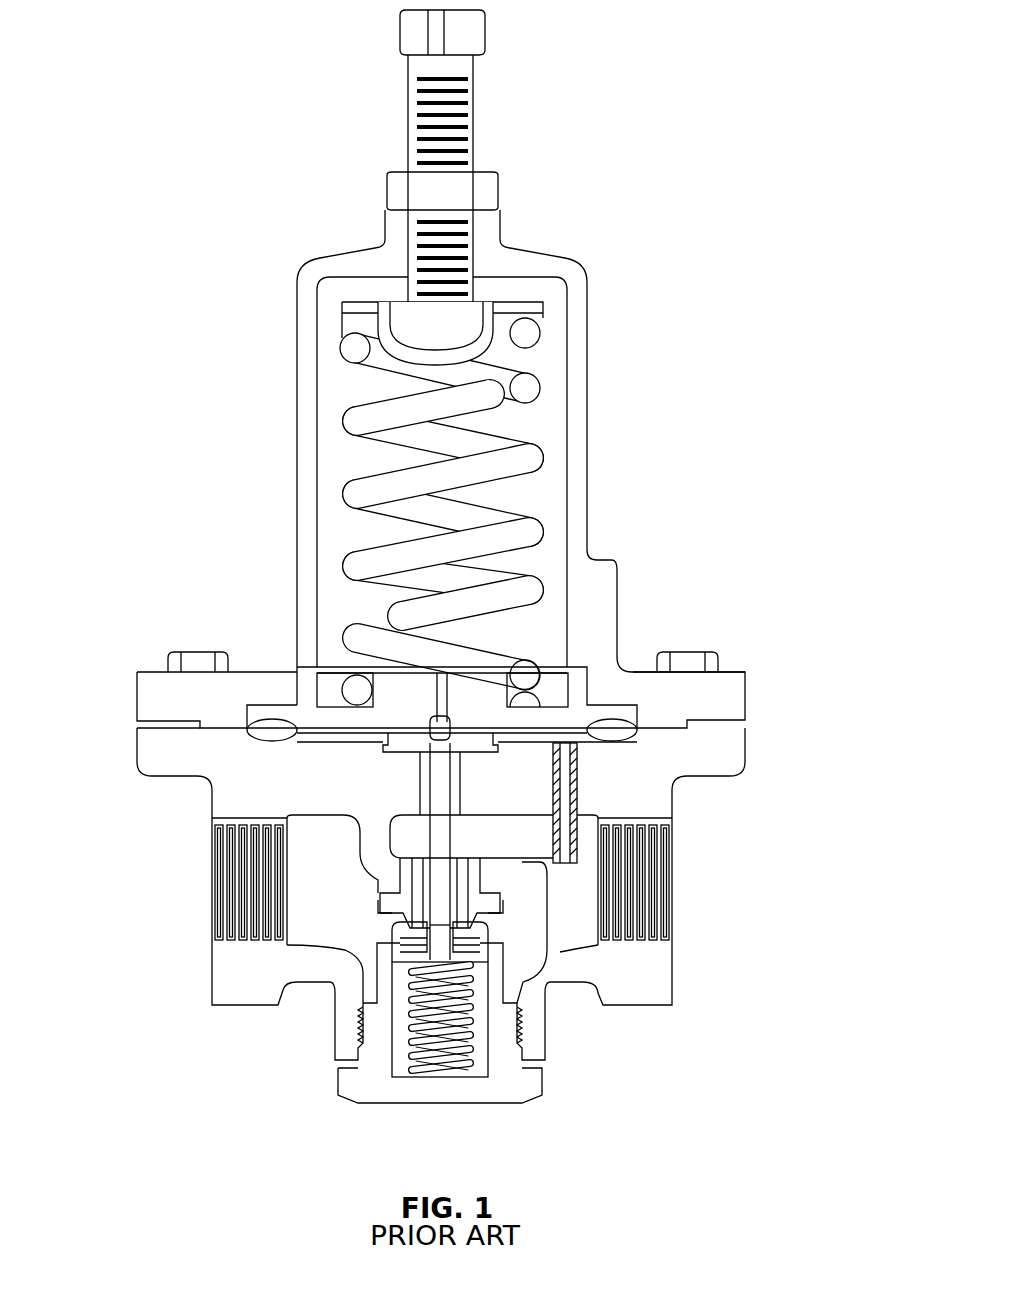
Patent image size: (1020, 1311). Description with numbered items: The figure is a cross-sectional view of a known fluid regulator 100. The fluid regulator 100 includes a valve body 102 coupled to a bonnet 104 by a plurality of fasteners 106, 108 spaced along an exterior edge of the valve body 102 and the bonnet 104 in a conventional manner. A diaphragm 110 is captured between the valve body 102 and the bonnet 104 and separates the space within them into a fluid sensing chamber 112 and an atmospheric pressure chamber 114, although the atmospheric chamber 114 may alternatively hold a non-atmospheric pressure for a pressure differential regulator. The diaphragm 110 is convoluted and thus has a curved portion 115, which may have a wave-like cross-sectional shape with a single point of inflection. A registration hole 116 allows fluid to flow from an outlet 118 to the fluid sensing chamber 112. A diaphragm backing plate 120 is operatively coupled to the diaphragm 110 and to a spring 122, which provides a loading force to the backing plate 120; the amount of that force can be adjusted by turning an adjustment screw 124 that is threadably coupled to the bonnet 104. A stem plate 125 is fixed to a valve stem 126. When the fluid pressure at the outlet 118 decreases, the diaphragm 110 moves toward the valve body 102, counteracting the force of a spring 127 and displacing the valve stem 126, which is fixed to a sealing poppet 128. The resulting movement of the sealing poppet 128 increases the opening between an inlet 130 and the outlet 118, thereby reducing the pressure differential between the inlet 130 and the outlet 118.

The fluid regulator 100 is at (605, 193).
The valve body 102 is at (706, 768).
The bonnet 104 is at (157, 694).
The fastener 106 is at (193, 650).
The fastener 108 is at (692, 651).
The diaphragm 110 is at (355, 725).
The fluid sensing chamber 112 is at (296, 740).
The atmospheric pressure chamber 114 is at (256, 712).
The curved portion 115 is at (277, 717).
The registration hole 116 is at (565, 843).
The outlet 118 is at (580, 917).
The diaphragm backing plate 120 is at (482, 707).
The spring 122 is at (384, 480).
The adjustment screw 124 is at (438, 155).
The stem plate 125 is at (458, 738).
The valve stem 126 is at (438, 910).
The spring 127 is at (470, 990).
The sealing poppet 128 is at (398, 962).
The inlet 130 is at (232, 860).